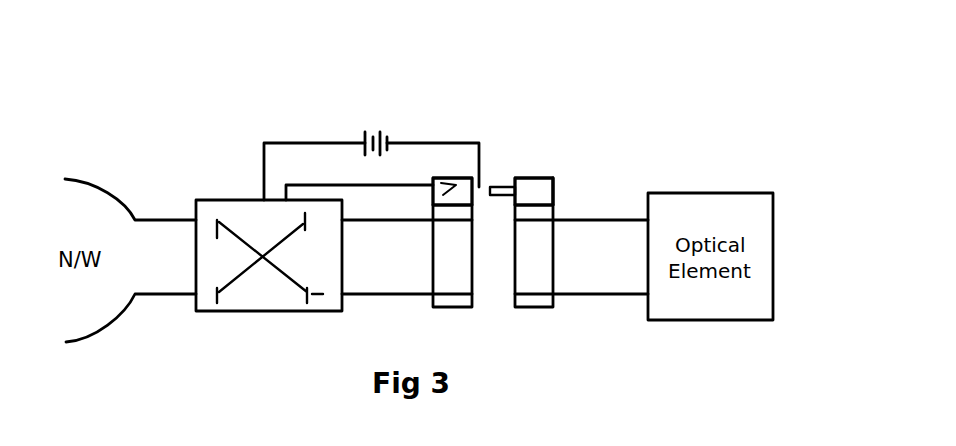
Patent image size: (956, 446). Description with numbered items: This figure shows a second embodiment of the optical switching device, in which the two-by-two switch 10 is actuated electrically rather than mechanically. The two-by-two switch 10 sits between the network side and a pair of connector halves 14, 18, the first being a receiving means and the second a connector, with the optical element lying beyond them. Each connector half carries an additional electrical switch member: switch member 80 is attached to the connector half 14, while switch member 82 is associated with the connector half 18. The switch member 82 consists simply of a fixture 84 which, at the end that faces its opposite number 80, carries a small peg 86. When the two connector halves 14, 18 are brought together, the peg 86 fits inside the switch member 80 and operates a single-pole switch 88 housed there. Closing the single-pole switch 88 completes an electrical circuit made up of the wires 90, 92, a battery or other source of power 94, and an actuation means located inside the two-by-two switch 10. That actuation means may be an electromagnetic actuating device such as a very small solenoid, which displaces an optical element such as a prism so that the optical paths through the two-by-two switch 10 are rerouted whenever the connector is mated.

The 2×2 switch 10 is at (213, 312).
The connector half 14 is at (445, 310).
The connector half 18 is at (545, 308).
The electrical switch member 80 is at (456, 178).
The electrical switch member 82 is at (533, 178).
The fixture 84 is at (553, 180).
The peg 86 is at (500, 187).
The single-pole switch 88 is at (448, 182).
The wire 90 is at (292, 182).
The wire 92 is at (262, 180).
The battery or other source of power 94 is at (365, 133).